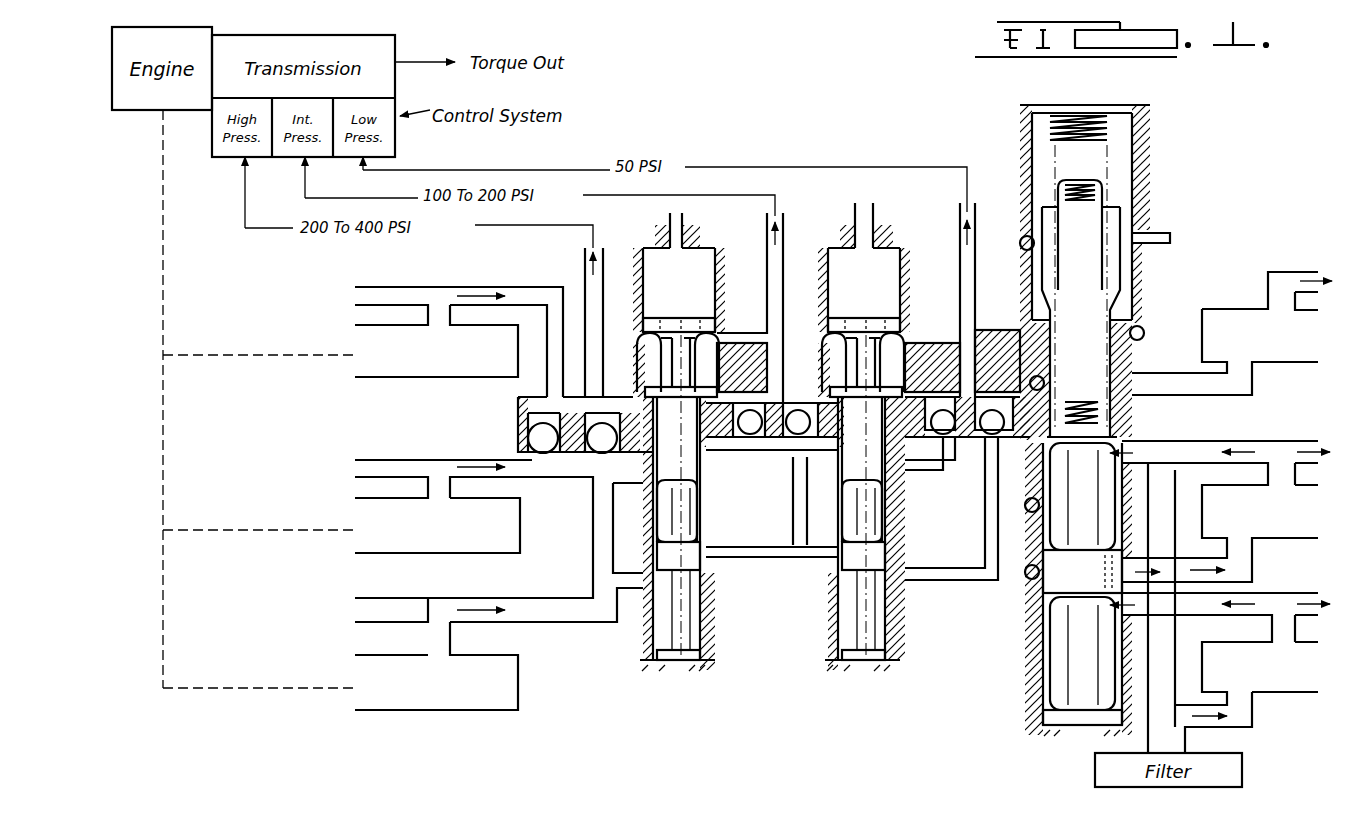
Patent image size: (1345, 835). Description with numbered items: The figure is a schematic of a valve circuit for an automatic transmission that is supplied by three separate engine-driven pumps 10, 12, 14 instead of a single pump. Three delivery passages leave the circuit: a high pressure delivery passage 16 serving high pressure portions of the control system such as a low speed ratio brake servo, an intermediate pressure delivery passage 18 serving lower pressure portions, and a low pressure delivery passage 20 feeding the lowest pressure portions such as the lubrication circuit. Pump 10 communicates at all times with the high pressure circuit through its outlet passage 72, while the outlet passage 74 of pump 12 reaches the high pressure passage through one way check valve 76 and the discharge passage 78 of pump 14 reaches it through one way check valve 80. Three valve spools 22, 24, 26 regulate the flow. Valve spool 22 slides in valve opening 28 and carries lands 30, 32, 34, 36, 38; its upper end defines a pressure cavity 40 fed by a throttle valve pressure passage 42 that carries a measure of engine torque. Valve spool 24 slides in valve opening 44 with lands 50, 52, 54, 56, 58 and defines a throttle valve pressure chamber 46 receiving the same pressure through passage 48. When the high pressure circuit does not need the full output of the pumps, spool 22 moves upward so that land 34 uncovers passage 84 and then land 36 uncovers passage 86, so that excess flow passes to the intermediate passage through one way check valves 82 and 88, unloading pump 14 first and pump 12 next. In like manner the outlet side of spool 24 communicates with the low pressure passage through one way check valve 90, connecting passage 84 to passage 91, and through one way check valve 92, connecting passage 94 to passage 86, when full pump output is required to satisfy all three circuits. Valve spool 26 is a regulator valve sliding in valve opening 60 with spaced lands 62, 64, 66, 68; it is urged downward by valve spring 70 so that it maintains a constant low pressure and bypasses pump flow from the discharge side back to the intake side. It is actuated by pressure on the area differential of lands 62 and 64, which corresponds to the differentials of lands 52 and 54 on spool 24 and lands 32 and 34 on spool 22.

The pump 10 is at (425, 380).
The pump 12 is at (405, 555).
The pump 14 is at (450, 712).
The high pressure delivery passage 16 is at (583, 258).
The intermediate pressure delivery passage 18 is at (790, 222).
The low pressure delivery passage 20 is at (975, 230).
The valve spool 22 is at (697, 439).
The valve spool 24 is at (889, 440).
The valve spool 26 is at (1092, 420).
The valve opening 28 is at (700, 500).
The land 30 is at (718, 325).
The land 32 is at (720, 380).
The land 34 is at (660, 494).
The land 36 is at (700, 545).
The land 38 is at (705, 655).
The pressure cavity 40 is at (710, 272).
The throttle valve pressure passage 42 is at (683, 222).
The valve opening 44 is at (900, 515).
The throttle valve pressure chamber 46 is at (890, 280).
The passage 48 is at (873, 210).
The valve land 50 is at (893, 317).
The valve land 52 is at (900, 370).
The valve land 54 is at (885, 502).
The valve land 56 is at (885, 545).
The valve land 58 is at (868, 665).
The valve opening 60 is at (1048, 520).
The valve land 62 is at (1125, 315).
The valve land 64 is at (1115, 385).
The valve land 66 is at (1045, 592).
The valve land 68 is at (1043, 717).
The valve spring 70 is at (1105, 140).
The outlet passage 72 is at (555, 320).
The outlet passage 74 is at (537, 470).
The one way check valve 76 is at (528, 438).
The discharge passage 78 is at (548, 605).
The one way check valve 80 is at (602, 428).
The one way check valve 82 is at (752, 408).
The passage 84 is at (740, 455).
The passage 86 is at (765, 557).
The one way check valve 88 is at (800, 410).
The one way check valve 90 is at (943, 410).
The passage 91 is at (950, 470).
The one way check valve 92 is at (992, 410).
The passage 94 is at (945, 600).